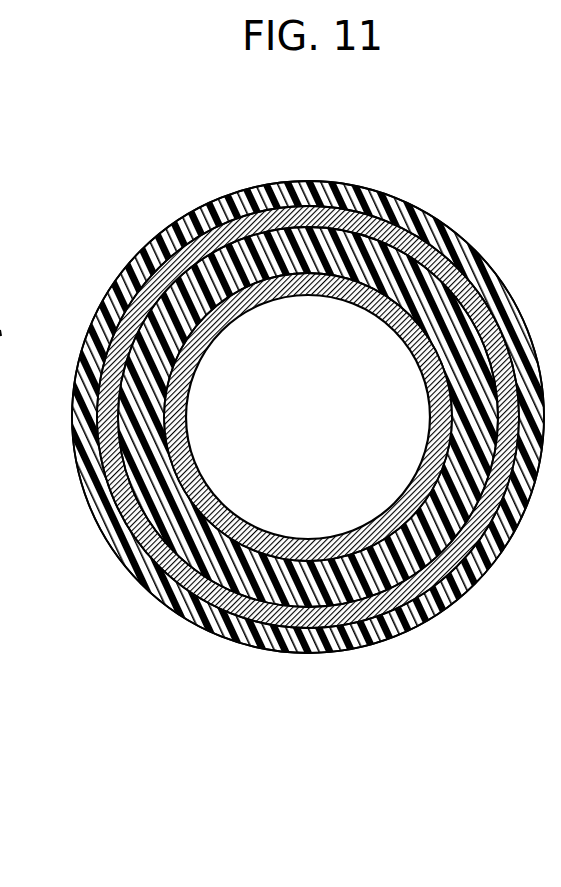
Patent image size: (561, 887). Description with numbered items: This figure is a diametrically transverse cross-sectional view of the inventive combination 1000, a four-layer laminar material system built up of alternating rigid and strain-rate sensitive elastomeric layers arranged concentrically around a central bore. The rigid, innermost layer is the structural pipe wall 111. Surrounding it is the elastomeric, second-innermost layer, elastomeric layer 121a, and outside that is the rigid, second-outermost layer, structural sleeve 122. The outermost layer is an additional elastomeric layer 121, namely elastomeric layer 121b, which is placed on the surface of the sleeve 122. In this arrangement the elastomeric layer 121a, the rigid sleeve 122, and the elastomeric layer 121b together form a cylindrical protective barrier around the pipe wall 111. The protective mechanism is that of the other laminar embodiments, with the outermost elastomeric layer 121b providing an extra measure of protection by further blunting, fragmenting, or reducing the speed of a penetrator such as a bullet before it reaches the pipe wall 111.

The inventive combination 1000 is at (0, 75).
The elastomeric layer 121 is at (290, 383).
The elastomeric layer 121a is at (148, 483).
The elastomeric layer 121b is at (233, 196).
The structural sleeve 122 is at (282, 624).
The structural pipe wall 111 is at (195, 342).